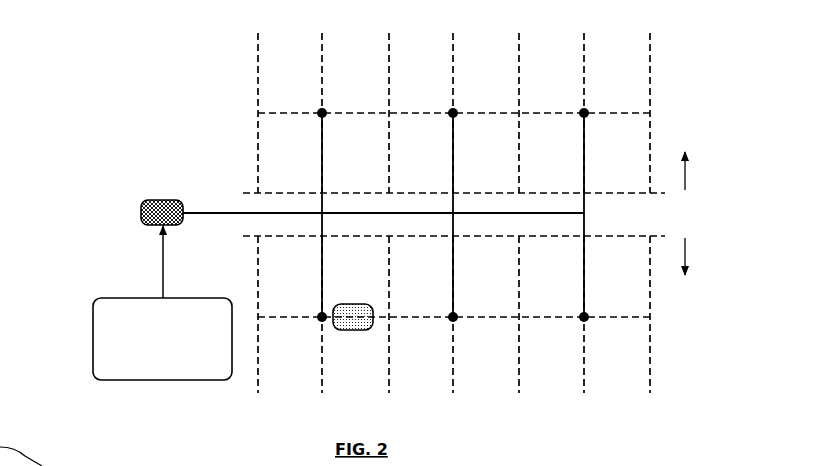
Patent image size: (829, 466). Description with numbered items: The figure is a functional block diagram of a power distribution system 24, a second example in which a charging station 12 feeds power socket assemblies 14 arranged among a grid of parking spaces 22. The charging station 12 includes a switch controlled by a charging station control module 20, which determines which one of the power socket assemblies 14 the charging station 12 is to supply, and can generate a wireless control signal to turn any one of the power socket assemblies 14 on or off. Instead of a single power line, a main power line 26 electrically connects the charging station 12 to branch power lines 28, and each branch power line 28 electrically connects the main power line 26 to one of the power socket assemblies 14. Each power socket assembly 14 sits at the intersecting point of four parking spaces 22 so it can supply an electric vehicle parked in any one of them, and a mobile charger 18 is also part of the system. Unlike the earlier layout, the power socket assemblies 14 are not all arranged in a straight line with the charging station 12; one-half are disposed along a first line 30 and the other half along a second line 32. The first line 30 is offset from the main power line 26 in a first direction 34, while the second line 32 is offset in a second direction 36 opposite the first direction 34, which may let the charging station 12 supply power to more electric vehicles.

The power distribution system 24 is at (128, 55).
The parking spaces 22 is at (288, 52).
The power socket assemblies 14 is at (319, 110).
The branch power lines 28 is at (323, 141).
The first line 30 is at (622, 113).
The second line 32 is at (622, 317).
The main power line 26 is at (216, 210).
The charging station 12 is at (147, 205).
The charging station control module 20 is at (137, 297).
The mobile charger 18 is at (355, 318).
The first direction 34 is at (685, 180).
The second direction 36 is at (685, 248).